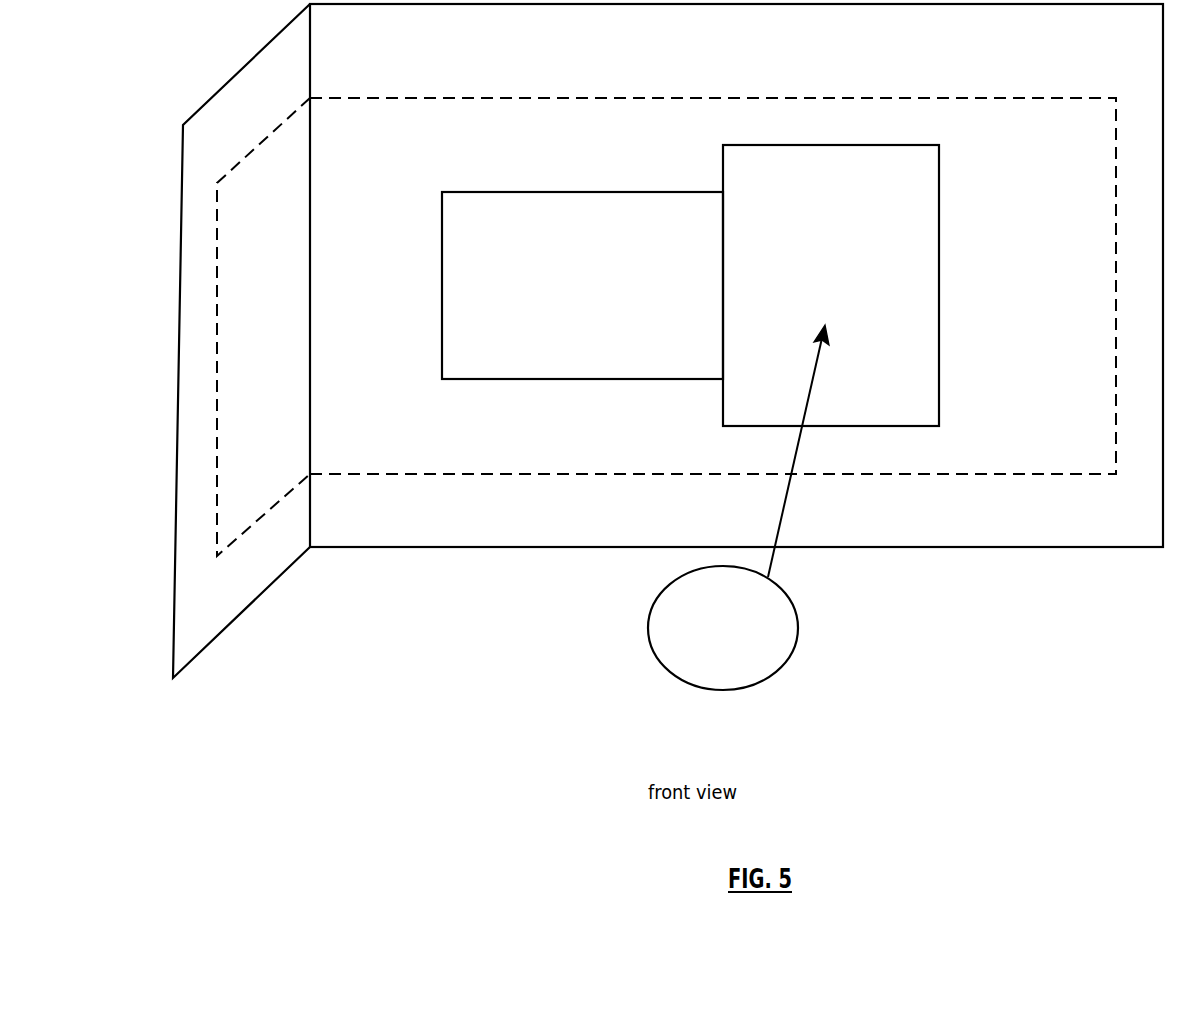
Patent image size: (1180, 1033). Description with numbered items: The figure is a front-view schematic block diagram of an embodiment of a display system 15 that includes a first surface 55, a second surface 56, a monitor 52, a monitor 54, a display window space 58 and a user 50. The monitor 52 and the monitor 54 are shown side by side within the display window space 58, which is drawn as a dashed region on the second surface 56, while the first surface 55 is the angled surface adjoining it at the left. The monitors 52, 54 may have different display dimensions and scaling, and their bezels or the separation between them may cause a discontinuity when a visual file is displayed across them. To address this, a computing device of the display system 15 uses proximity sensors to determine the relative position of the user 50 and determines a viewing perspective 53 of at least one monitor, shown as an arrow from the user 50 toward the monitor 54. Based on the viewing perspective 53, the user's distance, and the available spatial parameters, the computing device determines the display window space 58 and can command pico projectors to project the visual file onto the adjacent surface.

The display system 15 is at (1083, 802).
The user 50 is at (756, 641).
The monitor 52 is at (630, 299).
The viewing perspective 53 is at (985, 577).
The monitor 54 is at (878, 299).
The first surface 55 is at (318, 712).
The second surface 56 is at (812, 52).
The display window space 58 is at (776, 464).